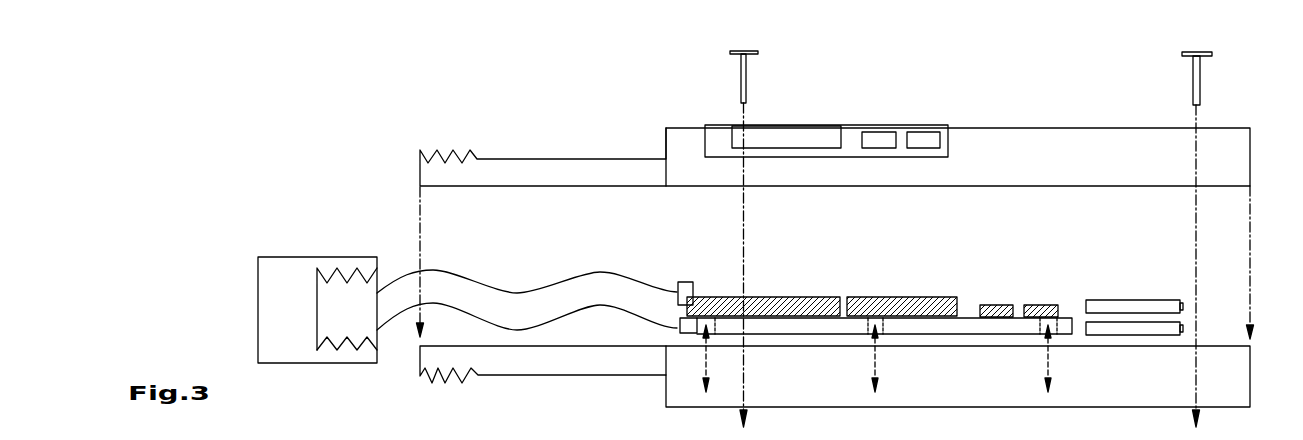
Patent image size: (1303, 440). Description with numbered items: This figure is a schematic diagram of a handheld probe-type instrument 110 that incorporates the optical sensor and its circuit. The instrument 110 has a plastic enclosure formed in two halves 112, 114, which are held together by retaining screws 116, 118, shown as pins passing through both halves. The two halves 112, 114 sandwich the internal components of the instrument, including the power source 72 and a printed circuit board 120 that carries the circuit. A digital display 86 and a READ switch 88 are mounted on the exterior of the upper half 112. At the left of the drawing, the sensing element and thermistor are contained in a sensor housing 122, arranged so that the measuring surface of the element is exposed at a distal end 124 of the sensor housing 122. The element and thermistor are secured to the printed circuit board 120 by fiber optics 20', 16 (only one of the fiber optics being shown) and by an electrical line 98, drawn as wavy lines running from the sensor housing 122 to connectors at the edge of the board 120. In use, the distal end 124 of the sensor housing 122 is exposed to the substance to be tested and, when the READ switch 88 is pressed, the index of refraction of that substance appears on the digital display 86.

The handheld probe-type instrument 110 is at (985, 105).
The enclosure half 112 is at (1067, 155).
The enclosure half 114 is at (977, 373).
The retaining screw 116 is at (747, 50).
The retaining screw 118 is at (1200, 52).
The digital display 86 is at (788, 130).
The READ switch 88 is at (868, 137).
The printed circuit board 120 is at (805, 298).
The sensor housing 122 is at (340, 300).
The distal end 124 is at (258, 308).
The flexible cable 20' is at (527, 268).
The fiber optic 16 is at (608, 272).
The electrical line 98 is at (555, 318).
The power source 72 is at (1120, 300).